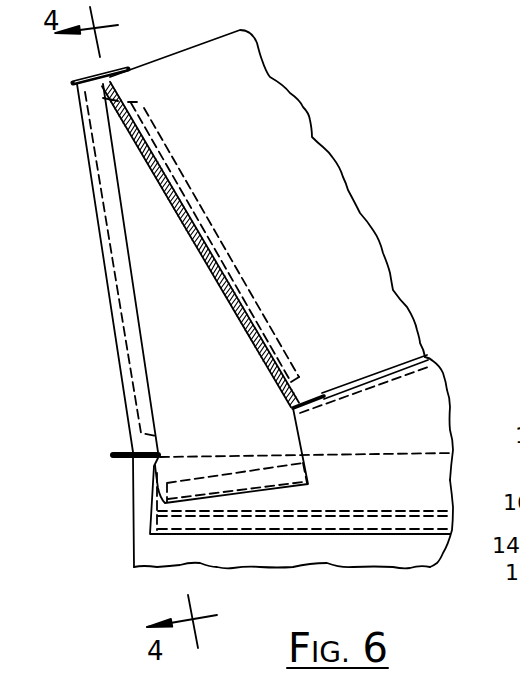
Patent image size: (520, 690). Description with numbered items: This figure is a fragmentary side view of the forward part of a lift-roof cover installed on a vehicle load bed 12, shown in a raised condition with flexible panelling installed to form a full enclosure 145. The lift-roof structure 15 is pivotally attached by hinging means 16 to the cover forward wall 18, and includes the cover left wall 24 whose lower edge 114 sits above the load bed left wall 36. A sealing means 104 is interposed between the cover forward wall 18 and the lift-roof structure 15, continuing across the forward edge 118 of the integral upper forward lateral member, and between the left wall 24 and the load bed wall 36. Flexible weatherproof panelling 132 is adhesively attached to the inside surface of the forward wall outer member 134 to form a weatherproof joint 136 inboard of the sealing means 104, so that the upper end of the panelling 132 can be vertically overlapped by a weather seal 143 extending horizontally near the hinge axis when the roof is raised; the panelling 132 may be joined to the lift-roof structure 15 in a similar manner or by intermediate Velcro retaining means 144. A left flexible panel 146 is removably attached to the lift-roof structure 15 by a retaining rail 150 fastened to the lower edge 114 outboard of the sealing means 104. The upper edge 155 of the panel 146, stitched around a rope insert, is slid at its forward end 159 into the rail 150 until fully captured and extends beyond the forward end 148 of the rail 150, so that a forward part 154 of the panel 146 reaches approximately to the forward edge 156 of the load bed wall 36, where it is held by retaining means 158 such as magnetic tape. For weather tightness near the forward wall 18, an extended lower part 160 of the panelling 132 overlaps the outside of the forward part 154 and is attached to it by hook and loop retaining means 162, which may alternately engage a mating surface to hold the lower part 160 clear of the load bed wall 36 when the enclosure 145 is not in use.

The load bed 12 is at (153, 562).
The lift-roof structure 15 is at (312, 174).
The hinging means 16 is at (97, 102).
The cover forward wall 18 is at (87, 148).
The cover left wall 24 is at (360, 253).
The load bed left wall 36 is at (247, 551).
The sealing means 104 is at (203, 213).
The lower edge of the left wall 114 is at (422, 356).
The forward edge of the upper forward lateral member 118 is at (110, 90).
The flexible weatherproof panelling 132 is at (137, 192).
The forward wall outer member 134 is at (125, 294).
The weatherproof joint 136 is at (142, 243).
The weather seal 143 is at (107, 77).
The retaining means 144 is at (222, 236).
The full enclosure 145 is at (427, 393).
The left flexible panel 146 is at (427, 442).
The forward end of the retaining rail 148 is at (330, 393).
The retaining rail 150 is at (385, 362).
The forward part of the panel 154 is at (135, 512).
The upper edge of the left flexible panel 155 is at (313, 412).
The forward edge of the load bed wall 156 is at (135, 535).
The retaining means 158 is at (370, 533).
The forward end of the upper edge 159 is at (158, 460).
The extended lower part 160 is at (303, 437).
The hook and loop retaining means 162 is at (290, 488).